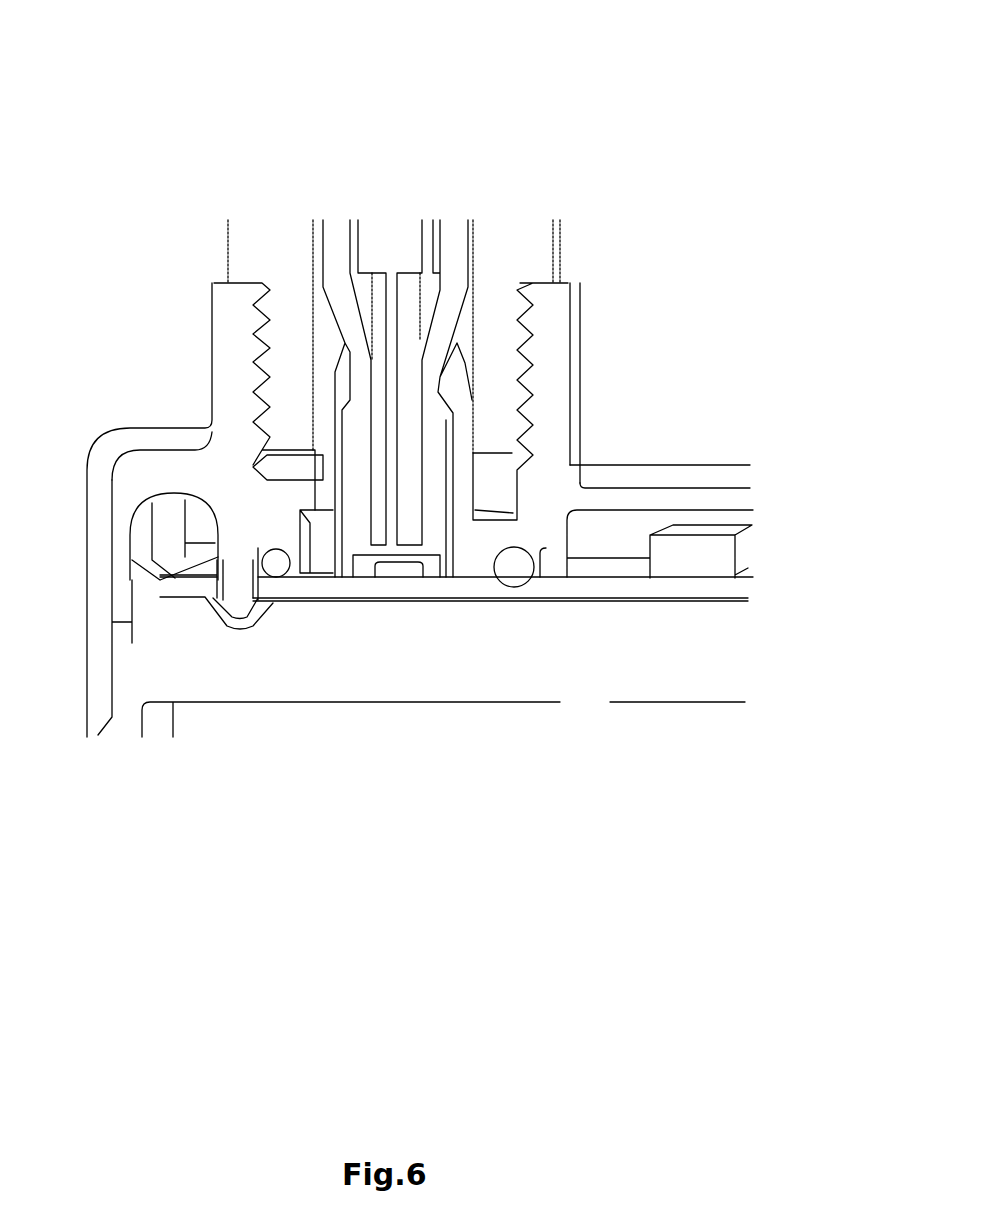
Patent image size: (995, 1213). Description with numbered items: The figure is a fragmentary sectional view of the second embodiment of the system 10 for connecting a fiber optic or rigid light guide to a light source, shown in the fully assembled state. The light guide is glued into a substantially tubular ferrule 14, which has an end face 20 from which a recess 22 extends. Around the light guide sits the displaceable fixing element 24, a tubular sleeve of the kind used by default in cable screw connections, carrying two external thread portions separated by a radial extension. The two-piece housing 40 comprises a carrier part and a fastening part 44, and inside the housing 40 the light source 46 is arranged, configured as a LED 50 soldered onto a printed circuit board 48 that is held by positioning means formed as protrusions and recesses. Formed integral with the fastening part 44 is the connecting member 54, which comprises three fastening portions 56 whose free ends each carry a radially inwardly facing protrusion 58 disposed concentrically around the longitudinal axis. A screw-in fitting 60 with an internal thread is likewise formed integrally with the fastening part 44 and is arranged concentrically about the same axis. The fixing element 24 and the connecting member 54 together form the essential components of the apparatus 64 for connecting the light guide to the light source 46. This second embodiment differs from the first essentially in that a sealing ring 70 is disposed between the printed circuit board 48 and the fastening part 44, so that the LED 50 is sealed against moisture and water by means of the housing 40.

The system 10 is at (148, 66).
The ferrule 14 is at (468, 240).
The end face 20 is at (347, 577).
The recess 22 is at (425, 577).
The fixing element 24 is at (240, 240).
The housing 40 is at (95, 390).
The fastening part 44 is at (173, 438).
The light source 46 is at (227, 680).
The printed circuit board 48 is at (603, 587).
The LED 50 is at (397, 577).
The connecting member 54 is at (322, 368).
The fastening portions 56 is at (458, 383).
The protrusion 58 is at (455, 398).
The screw-in fitting 60 is at (555, 298).
The apparatus 64 is at (118, 254).
The sealing ring 70 is at (513, 566).